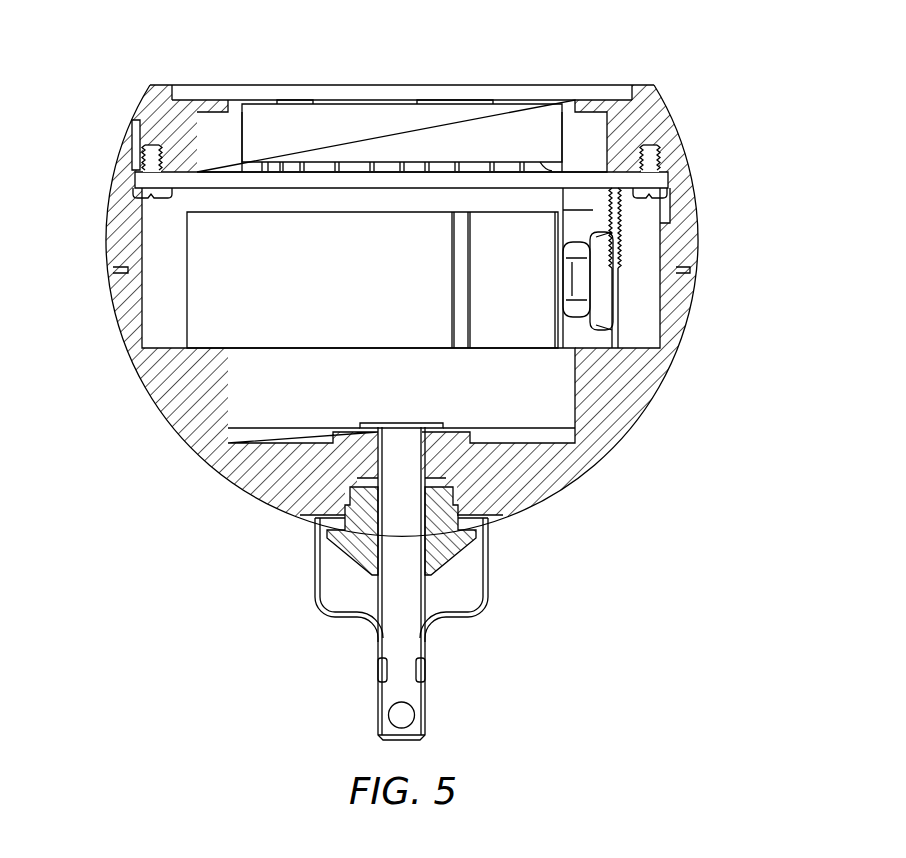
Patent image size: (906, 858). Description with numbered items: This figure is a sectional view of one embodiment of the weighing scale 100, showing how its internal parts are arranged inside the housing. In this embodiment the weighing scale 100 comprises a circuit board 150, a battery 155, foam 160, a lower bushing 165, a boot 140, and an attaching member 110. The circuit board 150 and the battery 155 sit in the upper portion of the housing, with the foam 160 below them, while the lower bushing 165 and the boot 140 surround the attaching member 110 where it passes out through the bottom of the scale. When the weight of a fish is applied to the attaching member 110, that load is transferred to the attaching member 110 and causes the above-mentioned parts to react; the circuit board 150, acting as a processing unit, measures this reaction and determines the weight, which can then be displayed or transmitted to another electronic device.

The weighing scale 100 is at (685, 113).
The attaching member 110 is at (423, 705).
The boot 140 is at (343, 600).
The circuit board 150 is at (188, 180).
The battery 155 is at (218, 286).
The foam 160 is at (252, 397).
The lower bushing 165 is at (343, 545).